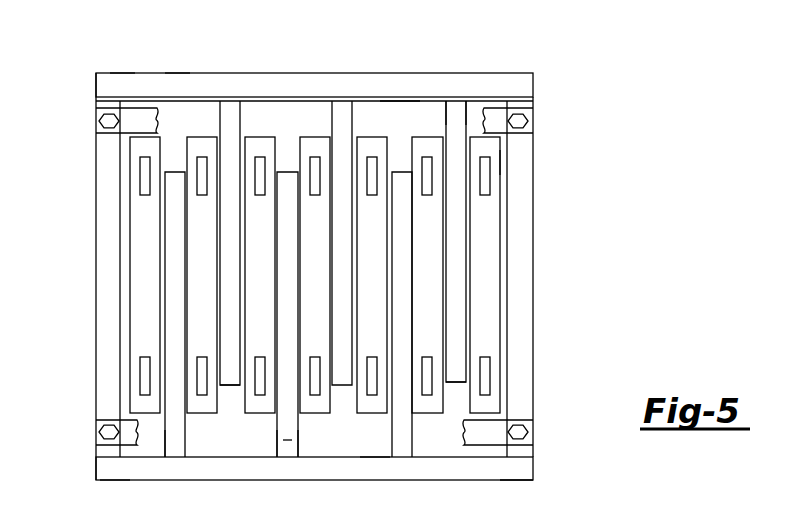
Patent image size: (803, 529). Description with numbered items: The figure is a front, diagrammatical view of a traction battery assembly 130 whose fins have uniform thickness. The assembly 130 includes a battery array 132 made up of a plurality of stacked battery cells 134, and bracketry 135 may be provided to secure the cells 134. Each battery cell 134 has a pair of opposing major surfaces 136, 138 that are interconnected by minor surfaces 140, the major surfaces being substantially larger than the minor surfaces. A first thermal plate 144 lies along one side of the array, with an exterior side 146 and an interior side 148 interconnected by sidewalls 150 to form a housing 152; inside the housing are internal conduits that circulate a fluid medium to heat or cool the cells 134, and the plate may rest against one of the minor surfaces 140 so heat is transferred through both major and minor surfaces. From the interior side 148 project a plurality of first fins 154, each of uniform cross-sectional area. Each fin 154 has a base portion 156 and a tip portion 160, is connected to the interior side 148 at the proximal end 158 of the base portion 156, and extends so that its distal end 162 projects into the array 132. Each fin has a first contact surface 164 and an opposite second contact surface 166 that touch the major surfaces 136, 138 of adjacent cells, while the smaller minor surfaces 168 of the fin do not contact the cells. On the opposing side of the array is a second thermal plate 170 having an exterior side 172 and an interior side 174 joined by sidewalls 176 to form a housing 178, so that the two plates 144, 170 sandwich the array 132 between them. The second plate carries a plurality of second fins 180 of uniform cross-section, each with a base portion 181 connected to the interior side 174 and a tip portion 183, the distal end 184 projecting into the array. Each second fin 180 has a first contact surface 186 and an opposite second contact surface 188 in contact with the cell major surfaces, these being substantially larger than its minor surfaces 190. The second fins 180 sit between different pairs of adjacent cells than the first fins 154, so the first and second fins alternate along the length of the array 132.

The traction battery assembly 130 is at (552, 67).
The battery array 132 is at (143, 290).
The battery cells 134 is at (423, 140).
The bracketry 135 is at (96, 242).
The major surface 136 is at (500, 162).
The major surface 138 is at (130, 177).
The minor surfaces 140 is at (255, 135).
The first thermal plate 144 is at (532, 82).
The exterior side 146 is at (177, 73).
The interior side 148 is at (393, 101).
The sidewalls 150 is at (100, 85).
The housing 152 is at (122, 73).
The first fins 154 is at (228, 110).
The base portion 156 is at (341, 113).
The proximal end 158 is at (222, 101).
The tip portion 160 is at (457, 378).
The distal end 162 is at (228, 387).
The first contact surface 164 is at (468, 107).
The second contact surface 166 is at (444, 108).
The minor surfaces 168 is at (457, 287).
The second thermal plate 170 is at (530, 468).
The exterior side 172 is at (517, 481).
The interior side 174 is at (377, 457).
The sidewalls 176 is at (100, 468).
The housing 178 is at (118, 481).
The second fins 180 is at (412, 432).
The base portion 181 is at (173, 448).
The tip portion 183 is at (175, 172).
The distal end 184 is at (287, 172).
The first contact surface 186 is at (298, 440).
The second contact surface 188 is at (278, 439).
The minor surfaces 190 is at (288, 447).